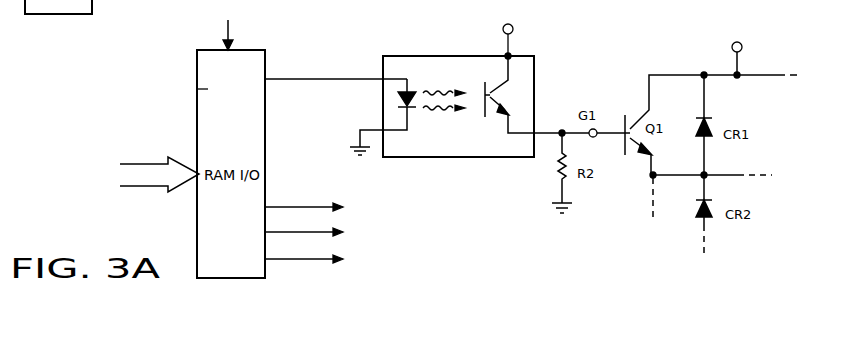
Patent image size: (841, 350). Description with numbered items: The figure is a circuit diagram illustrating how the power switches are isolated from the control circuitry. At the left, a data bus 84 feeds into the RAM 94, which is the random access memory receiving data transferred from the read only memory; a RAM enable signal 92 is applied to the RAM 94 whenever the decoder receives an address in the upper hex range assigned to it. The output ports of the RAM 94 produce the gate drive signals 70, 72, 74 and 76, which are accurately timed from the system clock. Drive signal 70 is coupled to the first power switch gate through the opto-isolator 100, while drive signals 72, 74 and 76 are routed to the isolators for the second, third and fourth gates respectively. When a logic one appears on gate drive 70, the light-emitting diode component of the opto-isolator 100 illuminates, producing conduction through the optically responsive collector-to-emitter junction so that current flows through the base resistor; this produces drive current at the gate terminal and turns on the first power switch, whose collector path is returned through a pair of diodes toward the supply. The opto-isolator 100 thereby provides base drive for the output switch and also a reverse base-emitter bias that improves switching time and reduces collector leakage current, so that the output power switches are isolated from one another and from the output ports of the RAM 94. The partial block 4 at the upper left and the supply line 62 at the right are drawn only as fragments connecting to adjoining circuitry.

The computer/controller block 4 is at (25, 14).
The RAM enable signal 92 is at (223, 31).
The random access memory 94 is at (197, 90).
The data bus 84 is at (145, 170).
The gate drive signal 70 is at (303, 77).
The gate drive signal 72 is at (278, 207).
The gate drive signal 74 is at (282, 232).
The gate drive signal 76 is at (285, 259).
The opto-isolator 100 is at (446, 56).
The supply voltage line 62 is at (737, 63).